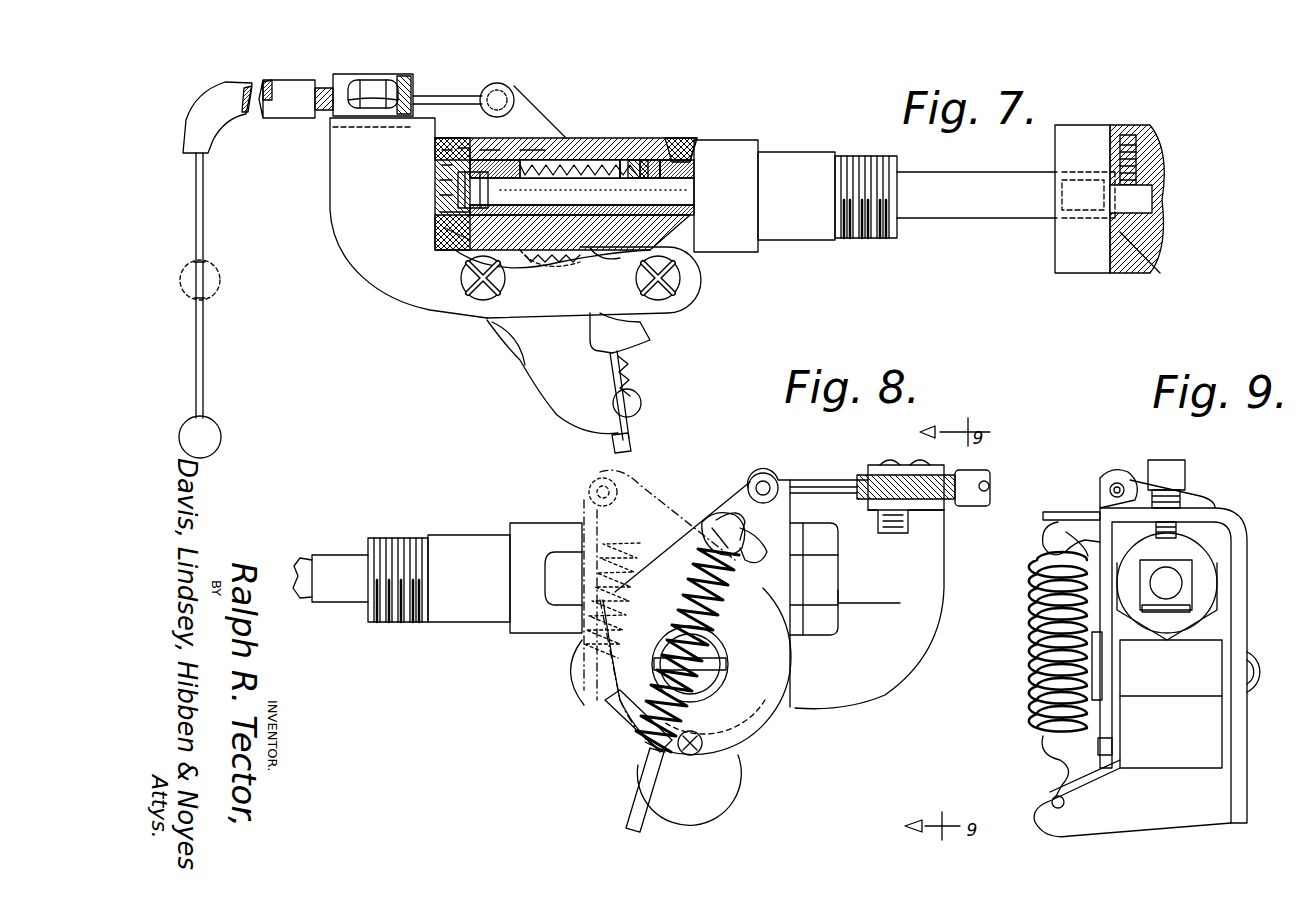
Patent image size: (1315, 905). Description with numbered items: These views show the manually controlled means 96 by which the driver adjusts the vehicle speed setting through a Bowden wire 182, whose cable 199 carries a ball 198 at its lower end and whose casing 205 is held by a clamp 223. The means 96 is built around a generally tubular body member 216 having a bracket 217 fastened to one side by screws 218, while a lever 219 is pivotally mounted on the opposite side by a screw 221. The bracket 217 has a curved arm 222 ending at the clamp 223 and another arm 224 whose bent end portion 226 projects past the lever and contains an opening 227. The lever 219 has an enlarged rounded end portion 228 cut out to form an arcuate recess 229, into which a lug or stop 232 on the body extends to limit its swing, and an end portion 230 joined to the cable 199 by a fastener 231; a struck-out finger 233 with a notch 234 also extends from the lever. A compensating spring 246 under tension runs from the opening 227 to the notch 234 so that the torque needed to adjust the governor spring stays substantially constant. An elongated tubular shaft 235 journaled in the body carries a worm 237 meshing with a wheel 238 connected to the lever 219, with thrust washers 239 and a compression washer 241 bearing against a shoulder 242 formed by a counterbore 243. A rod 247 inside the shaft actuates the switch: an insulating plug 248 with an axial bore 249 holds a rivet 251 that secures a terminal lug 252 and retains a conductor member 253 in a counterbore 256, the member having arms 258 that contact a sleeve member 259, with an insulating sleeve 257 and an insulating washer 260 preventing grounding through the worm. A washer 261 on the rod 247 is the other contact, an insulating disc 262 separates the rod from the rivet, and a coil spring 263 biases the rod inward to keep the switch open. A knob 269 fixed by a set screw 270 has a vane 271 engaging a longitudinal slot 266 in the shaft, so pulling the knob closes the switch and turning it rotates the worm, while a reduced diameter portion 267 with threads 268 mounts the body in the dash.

In FIG. 7, the manually controlled means 96 is at (448, 336).
In FIG. 8, the manually controlled means 96 is at (556, 714).
In FIG. 9, the manually controlled means 96 is at (1258, 743).
In FIG. 7, the Bowden wire 182 is at (262, 270).
In FIG. 7, the ball 198 is at (203, 438).
In FIG. 7, the cable 199 is at (204, 388).
In FIG. 8, the cable 199 is at (818, 487).
In FIG. 9, the cable 199 is at (1108, 486).
In FIG. 7, the Bowden wire casing 205 is at (216, 126).
In FIG. 8, the Bowden wire casing 205 is at (985, 488).
In FIG. 9, the Bowden wire casing 205 is at (1100, 488).
In FIG. 7, the tubular body member 216 is at (735, 150).
In FIG. 8, the tubular body member 216 is at (545, 523).
In FIG. 7, the bracket 217 is at (545, 302).
In FIG. 8, the bracket 217 is at (805, 705).
In FIG. 9, the bracket 217 is at (1247, 535).
In FIG. 7, the screws 218 is at (468, 285).
In FIG. 9, the screws 218 is at (1269, 672).
In FIG. 7, the lever 219 is at (560, 138).
In FIG. 8, the lever 219 is at (740, 668).
In FIG. 9, the lever 219 is at (1112, 714).
In FIG. 8, the screw 221 is at (722, 650).
In FIG. 9, the screw 221 is at (1050, 652).
In FIG. 7, the curved arm 222 is at (338, 170).
In FIG. 8, the curved arm 222 is at (920, 552).
In FIG. 7, the clamp 223 is at (405, 82).
In FIG. 8, the clamp 223 is at (875, 465).
In FIG. 9, the clamp 223 is at (1140, 475).
In FIG. 7, the arm 224 is at (550, 418).
In FIG. 8, the arm 224 is at (725, 798).
In FIG. 7, the bent end portion 226 is at (633, 445).
In FIG. 8, the bent end portion 226 is at (634, 795).
In FIG. 9, the bent end portion 226 is at (1132, 822).
In FIG. 9, the opening 227 is at (1045, 808).
In FIG. 8, the enlarged rounded end portion 228 is at (585, 690).
In FIG. 8, the arcuate recess 229 is at (620, 718).
In FIG. 8, the end portion 230 is at (592, 472).
In FIG. 9, the end portion 230 is at (1075, 518).
In FIG. 7, the fastener 231 is at (515, 100).
In FIG. 8, the fastener 231 is at (757, 478).
In FIG. 8, the lug or stop 232 is at (703, 745).
In FIG. 8, the struck-out prong or finger 233 is at (708, 528).
In FIG. 9, the struck-out prong or finger 233 is at (1062, 540).
In FIG. 8, the notch 234 is at (730, 515).
In FIG. 7, the elongated tubular shaft 235 is at (700, 138).
In FIG. 8, the elongated tubular shaft 235 is at (345, 555).
In FIG. 7, the worm 237 is at (600, 150).
In FIG. 7, the wheel 238 is at (585, 252).
In FIG. 7, the thrust washers 239 is at (621, 160).
In FIG. 7, the compression washer 241 is at (638, 160).
In FIG. 7, the shoulder 242 is at (684, 150).
In FIG. 7, the counterbore 243 is at (572, 138).
In FIG. 7, the compensating spring 246 is at (633, 376).
In FIG. 8, the compensating spring 246 is at (715, 606).
In FIG. 9, the compensating spring 246 is at (1037, 603).
In FIG. 7, the rod 247 is at (678, 195).
In FIG. 8, the rod 247 is at (300, 560).
In FIG. 7, the insulating plug 248 is at (463, 150).
In FIG. 8, the insulating plug 248 is at (822, 628).
In FIG. 9, the insulating plug 248 is at (1167, 586).
In FIG. 7, the central axial bore 249 is at (438, 197).
In FIG. 7, the rivet 251 is at (438, 182).
In FIG. 9, the rivet 251 is at (1182, 585).
In FIG. 7, the terminal lug 252 is at (440, 168).
In FIG. 8, the terminal lug 252 is at (870, 608).
In FIG. 9, the terminal lug 252 is at (1190, 610).
In FIG. 7, the conductor member 253 is at (450, 232).
In FIG. 7, the counterbore 256 is at (455, 146).
In FIG. 7, the insulating sleeve 257 is at (445, 152).
In FIG. 7, the axially extending arms 258 is at (500, 150).
In FIG. 7, the sleeve member 259 is at (545, 150).
In FIG. 7, the insulating washer 260 is at (540, 260).
In FIG. 7, the washer 261 is at (490, 190).
In FIG. 7, the insulating disc 262 is at (445, 214).
In FIG. 7, the coil spring 263 is at (540, 190).
In FIG. 7, the longitudinal slot 266 is at (1030, 185).
In FIG. 7, the reduced diameter portion 267 is at (812, 160).
In FIG. 8, the reduced diameter portion 267 is at (469, 578).
In FIG. 7, the threads 268 is at (880, 240).
In FIG. 8, the threads 268 is at (398, 580).
In FIG. 7, the knob 269 is at (1135, 272).
In FIG. 7, the set screw 270 is at (1160, 165).
In FIG. 7, the vane 271 is at (1075, 210).